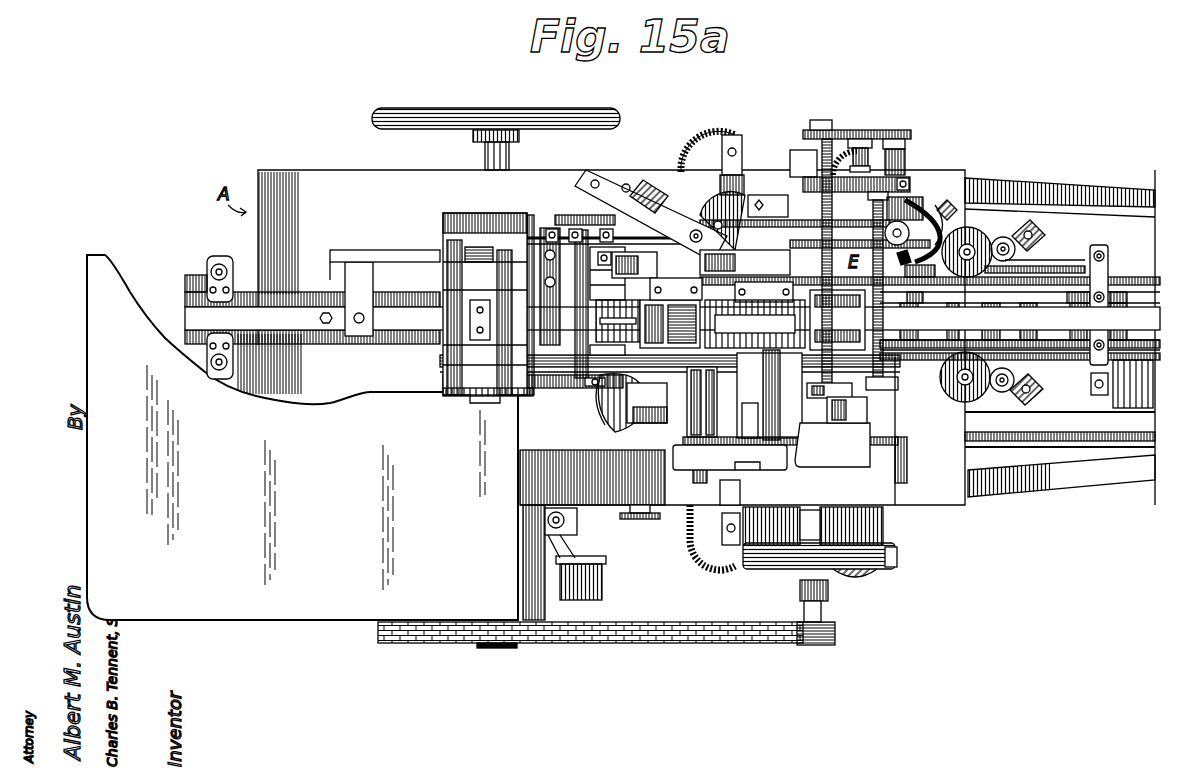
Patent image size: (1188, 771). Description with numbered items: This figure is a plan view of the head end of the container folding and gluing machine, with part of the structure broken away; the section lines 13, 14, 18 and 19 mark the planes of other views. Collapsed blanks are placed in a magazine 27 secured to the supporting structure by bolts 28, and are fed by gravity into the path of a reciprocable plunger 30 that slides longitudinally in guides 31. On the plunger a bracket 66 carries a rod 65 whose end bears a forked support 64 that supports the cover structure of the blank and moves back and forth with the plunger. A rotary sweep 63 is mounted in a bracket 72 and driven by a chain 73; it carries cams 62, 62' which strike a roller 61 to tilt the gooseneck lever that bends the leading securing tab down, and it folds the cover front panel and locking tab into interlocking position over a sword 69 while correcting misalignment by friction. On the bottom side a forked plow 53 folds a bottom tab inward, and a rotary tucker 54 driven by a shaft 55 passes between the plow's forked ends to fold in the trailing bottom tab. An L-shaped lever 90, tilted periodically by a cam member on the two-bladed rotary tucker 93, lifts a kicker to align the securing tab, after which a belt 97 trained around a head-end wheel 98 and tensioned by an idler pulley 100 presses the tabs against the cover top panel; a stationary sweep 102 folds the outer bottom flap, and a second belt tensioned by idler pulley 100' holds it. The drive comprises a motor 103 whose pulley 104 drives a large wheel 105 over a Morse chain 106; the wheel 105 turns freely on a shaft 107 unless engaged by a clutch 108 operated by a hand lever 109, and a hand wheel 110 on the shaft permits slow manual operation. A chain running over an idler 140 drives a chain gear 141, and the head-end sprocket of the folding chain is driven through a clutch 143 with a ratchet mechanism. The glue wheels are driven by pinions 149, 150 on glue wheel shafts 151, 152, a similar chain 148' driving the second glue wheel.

The shaft 13 is at (888, 128).
The section line 14 is at (1163, 303).
The section line 18 is at (372, 737).
The section line 19 is at (753, 730).
The magazine 27 is at (490, 378).
The bolts 28 is at (465, 240).
The reciprocable plunger 30 is at (403, 330).
The guides 31 is at (206, 274).
The plow 53 is at (622, 403).
The rotary tucker 54 is at (608, 410).
The shaft 55 is at (632, 423).
The roller 61 is at (686, 228).
The cam 62 is at (764, 293).
The cam 62' is at (758, 161).
The rotary sweep 63 is at (705, 205).
The forked support 64 is at (552, 240).
The rod 65 is at (395, 280).
The bracket 66 is at (358, 262).
The sword 69 is at (676, 289).
The bracket 72 is at (588, 235).
The chain 73 is at (762, 205).
The L-shaped lever 90 is at (960, 235).
The two-bladed rotary tucker 93 is at (870, 218).
The belt 97 is at (1090, 268).
The wheel 98 is at (1000, 185).
The idler pulley 100 is at (1032, 239).
The idler pulley 100' is at (1020, 403).
The stationary sweep 102 is at (865, 385).
The electric motor 103 is at (870, 530).
The pulley 104 is at (818, 645).
The large wheel 105 is at (482, 650).
The Morse chain 106 is at (640, 645).
The shaft 107 is at (512, 158).
The clutch 108 is at (548, 578).
The hand lever 109 is at (575, 528).
The hand wheel 110 is at (445, 112).
The idler 140 is at (865, 128).
The chain gear 141 is at (830, 126).
The clutch 143 is at (775, 365).
The chain 148' is at (790, 466).
The pinion 149 is at (825, 435).
The pinion 150 is at (688, 475).
The glue wheel shaft 151 is at (835, 466).
The glue wheel shaft 152 is at (702, 470).